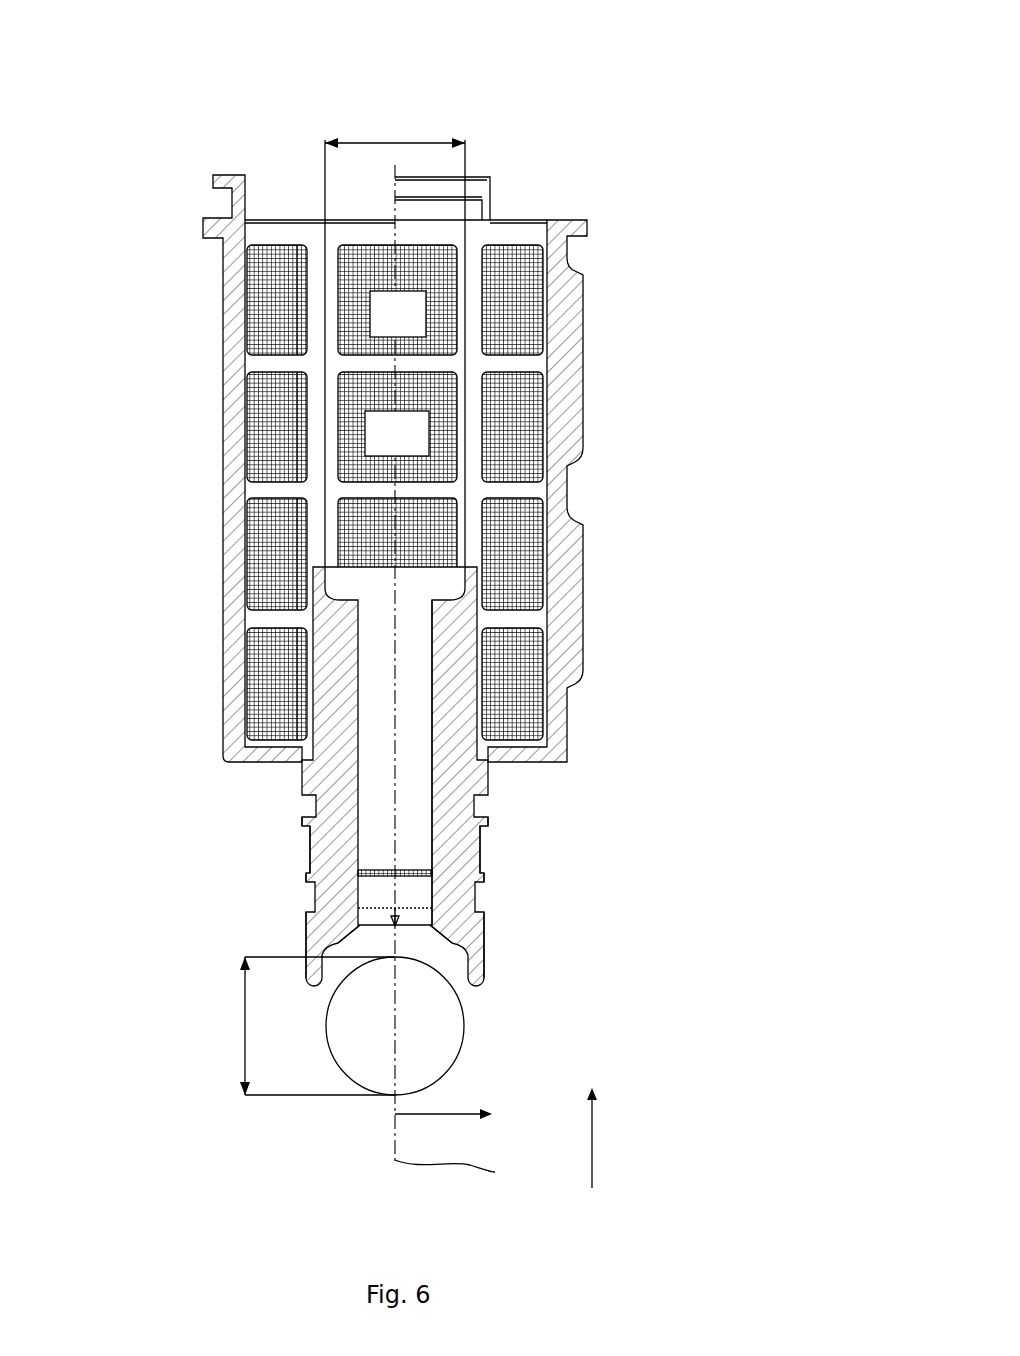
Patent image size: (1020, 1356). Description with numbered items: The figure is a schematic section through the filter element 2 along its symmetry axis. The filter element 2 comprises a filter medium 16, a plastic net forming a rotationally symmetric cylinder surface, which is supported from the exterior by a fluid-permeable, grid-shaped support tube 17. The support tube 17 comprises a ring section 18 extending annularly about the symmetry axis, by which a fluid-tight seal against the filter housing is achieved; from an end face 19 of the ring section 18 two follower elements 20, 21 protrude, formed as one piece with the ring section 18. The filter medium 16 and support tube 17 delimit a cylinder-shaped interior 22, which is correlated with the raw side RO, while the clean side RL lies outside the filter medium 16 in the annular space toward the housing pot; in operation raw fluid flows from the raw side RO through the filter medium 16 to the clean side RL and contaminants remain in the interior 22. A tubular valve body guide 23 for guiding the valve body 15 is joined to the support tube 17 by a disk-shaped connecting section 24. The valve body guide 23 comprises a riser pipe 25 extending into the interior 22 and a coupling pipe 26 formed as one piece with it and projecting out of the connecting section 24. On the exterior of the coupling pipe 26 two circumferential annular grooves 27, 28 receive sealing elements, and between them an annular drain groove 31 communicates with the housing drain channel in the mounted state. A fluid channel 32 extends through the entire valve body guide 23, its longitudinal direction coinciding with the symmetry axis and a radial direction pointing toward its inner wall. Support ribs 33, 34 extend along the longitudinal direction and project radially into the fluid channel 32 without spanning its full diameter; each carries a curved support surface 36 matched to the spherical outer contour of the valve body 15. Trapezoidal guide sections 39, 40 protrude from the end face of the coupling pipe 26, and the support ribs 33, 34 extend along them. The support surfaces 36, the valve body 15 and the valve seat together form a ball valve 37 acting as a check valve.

The filter element 2 is at (365, 75).
The valve body 15 is at (465, 1023).
The filter medium 16 is at (270, 542).
The support tube 17 is at (584, 375).
The ring section 18 is at (588, 226).
The end face 19 is at (569, 220).
The follower element 20 is at (218, 177).
The follower element 21 is at (471, 178).
The interior 22 is at (412, 327).
The valve body guide 23 is at (780, 572).
The connecting section 24 is at (273, 765).
The riser pipe 25 is at (478, 617).
The coupling pipe 26 is at (490, 783).
The annular groove 27 is at (315, 818).
The annular groove 28 is at (317, 900).
The drain groove 31 is at (312, 855).
The fluid channel 32 is at (383, 654).
The support rib 33 is at (360, 857).
The support rib 34 is at (433, 817).
The support surface 36 is at (327, 938).
The ball valve 37 is at (572, 968).
The guide section 39 is at (307, 947).
The guide section 40 is at (485, 938).
The raw side RO is at (415, 447).
The clean side RL is at (117, 417).